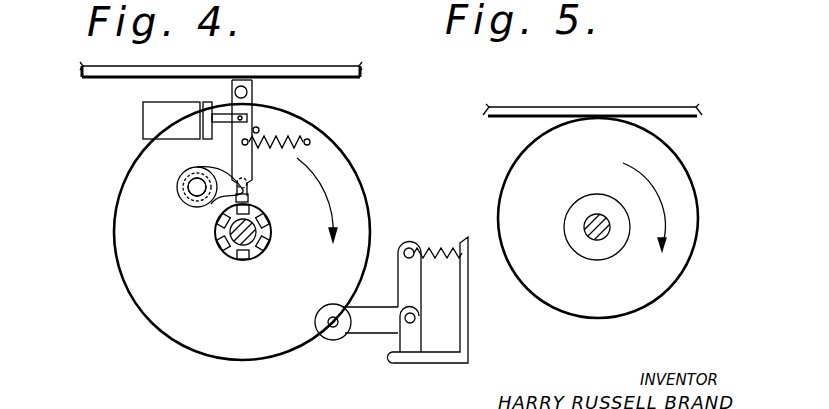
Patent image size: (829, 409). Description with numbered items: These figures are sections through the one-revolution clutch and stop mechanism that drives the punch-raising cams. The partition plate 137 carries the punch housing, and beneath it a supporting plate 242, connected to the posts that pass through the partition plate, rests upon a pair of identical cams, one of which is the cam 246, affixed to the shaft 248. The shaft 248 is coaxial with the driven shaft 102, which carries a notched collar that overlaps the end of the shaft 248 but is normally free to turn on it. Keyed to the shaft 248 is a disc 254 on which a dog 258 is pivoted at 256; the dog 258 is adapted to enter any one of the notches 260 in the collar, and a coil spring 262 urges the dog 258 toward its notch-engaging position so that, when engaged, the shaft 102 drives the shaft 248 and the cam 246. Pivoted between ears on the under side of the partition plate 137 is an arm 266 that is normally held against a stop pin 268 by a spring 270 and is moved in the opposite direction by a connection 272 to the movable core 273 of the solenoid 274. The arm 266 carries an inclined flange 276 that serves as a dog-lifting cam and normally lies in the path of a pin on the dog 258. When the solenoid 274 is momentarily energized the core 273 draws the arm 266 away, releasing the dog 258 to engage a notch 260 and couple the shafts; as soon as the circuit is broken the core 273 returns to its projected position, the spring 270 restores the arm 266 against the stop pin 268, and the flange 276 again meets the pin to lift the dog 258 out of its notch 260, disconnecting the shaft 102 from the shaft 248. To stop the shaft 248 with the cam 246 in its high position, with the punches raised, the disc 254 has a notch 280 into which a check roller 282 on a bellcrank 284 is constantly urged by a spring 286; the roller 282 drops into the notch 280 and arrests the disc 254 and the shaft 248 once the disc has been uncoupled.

In FIG. 4, the shaft 102 is at (242, 260).
In FIG. 4, the partition plate 137 is at (310, 72).
In FIG. 5, the supporting plate 242 is at (548, 107).
In FIG. 5, the cam 246 is at (673, 253).
In FIG. 5, the shaft 248 is at (610, 231).
In FIG. 4, the disc 254 is at (365, 177).
In FIG. 4, the pivot 256 is at (180, 186).
In FIG. 4, the dog 258 is at (250, 190).
In FIG. 4, the notches 260 is at (270, 215).
In FIG. 4, the coil spring 262 is at (182, 192).
In FIG. 4, the arm 266 is at (243, 163).
In FIG. 4, the stop pin 268 is at (259, 128).
In FIG. 4, the spring 270 is at (287, 133).
In FIG. 4, the connection 272 is at (216, 114).
In FIG. 4, the movable core 273 is at (206, 103).
In FIG. 4, the solenoid 274 is at (158, 122).
In FIG. 4, the inclined flange 276 is at (248, 188).
In FIG. 4, the notch 280 is at (325, 307).
In FIG. 4, the check roller 282 is at (333, 325).
In FIG. 4, the bellcrank 284 is at (377, 328).
In FIG. 4, the spring 286 is at (440, 248).